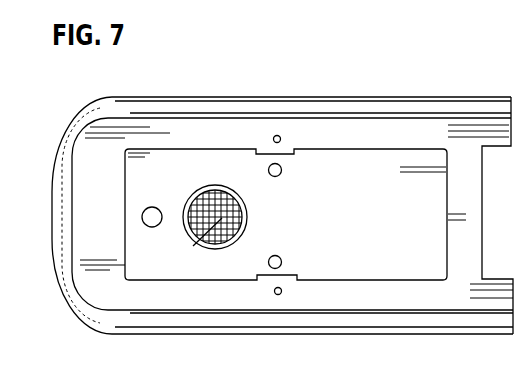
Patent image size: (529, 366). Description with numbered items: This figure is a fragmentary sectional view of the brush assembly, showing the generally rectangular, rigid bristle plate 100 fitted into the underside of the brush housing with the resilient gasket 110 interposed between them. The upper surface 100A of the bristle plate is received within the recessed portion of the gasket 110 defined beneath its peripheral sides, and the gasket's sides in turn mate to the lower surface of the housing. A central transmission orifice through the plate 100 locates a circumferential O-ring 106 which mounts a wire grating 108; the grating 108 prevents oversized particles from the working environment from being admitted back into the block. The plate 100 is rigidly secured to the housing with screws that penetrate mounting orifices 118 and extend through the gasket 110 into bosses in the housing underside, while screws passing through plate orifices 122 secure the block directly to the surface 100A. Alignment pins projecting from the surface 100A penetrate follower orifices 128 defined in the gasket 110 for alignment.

The resilient gasket 110 is at (403, 96).
The bristle blade 100 is at (437, 198).
The upper surface 100A is at (394, 245).
The O-ring 106 is at (240, 216).
The wire grating 108 is at (193, 246).
The mounting orifices 118 is at (155, 219).
The plate orifices 122 is at (280, 173).
The follower orifices 128 is at (280, 137).